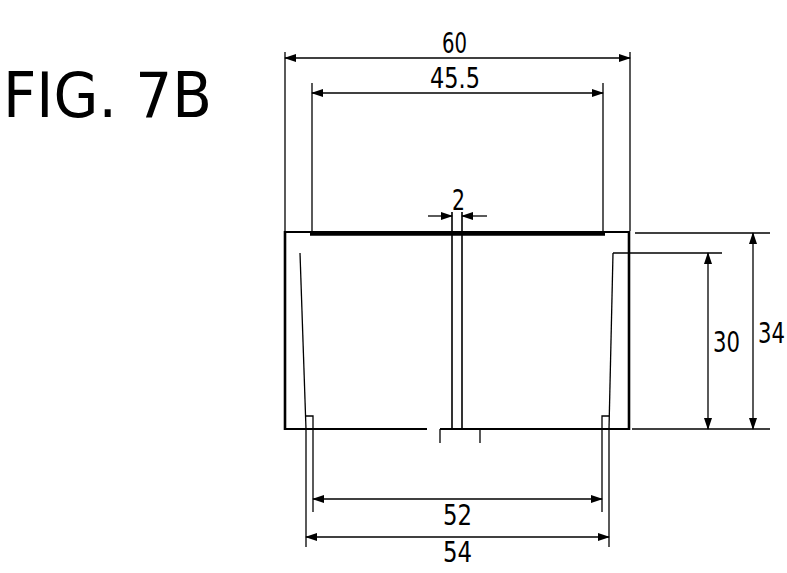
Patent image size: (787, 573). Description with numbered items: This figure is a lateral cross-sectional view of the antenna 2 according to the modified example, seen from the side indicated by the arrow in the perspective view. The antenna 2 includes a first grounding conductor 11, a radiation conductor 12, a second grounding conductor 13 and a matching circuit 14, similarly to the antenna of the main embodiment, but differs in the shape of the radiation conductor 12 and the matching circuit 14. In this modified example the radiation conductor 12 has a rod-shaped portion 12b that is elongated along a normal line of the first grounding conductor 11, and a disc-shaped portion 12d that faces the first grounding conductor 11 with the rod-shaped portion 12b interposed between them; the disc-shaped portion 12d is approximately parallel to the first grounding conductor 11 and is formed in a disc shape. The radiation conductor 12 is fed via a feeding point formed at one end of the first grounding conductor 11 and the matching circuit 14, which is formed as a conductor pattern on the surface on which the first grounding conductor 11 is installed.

The antenna 2 is at (648, 469).
The first grounding conductor 11 is at (344, 432).
The radiation conductor 12 is at (518, 152).
The rod-shaped portion 12b is at (452, 328).
The disc-shaped portion 12d is at (515, 232).
The second grounding conductor 13 is at (303, 346).
The matching circuit 14 is at (488, 443).